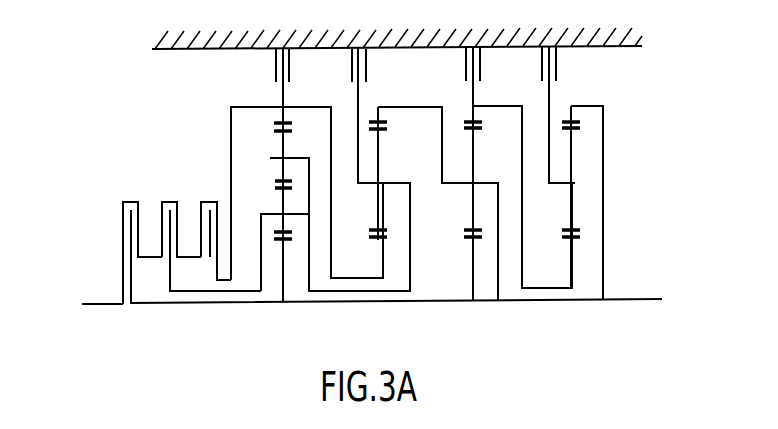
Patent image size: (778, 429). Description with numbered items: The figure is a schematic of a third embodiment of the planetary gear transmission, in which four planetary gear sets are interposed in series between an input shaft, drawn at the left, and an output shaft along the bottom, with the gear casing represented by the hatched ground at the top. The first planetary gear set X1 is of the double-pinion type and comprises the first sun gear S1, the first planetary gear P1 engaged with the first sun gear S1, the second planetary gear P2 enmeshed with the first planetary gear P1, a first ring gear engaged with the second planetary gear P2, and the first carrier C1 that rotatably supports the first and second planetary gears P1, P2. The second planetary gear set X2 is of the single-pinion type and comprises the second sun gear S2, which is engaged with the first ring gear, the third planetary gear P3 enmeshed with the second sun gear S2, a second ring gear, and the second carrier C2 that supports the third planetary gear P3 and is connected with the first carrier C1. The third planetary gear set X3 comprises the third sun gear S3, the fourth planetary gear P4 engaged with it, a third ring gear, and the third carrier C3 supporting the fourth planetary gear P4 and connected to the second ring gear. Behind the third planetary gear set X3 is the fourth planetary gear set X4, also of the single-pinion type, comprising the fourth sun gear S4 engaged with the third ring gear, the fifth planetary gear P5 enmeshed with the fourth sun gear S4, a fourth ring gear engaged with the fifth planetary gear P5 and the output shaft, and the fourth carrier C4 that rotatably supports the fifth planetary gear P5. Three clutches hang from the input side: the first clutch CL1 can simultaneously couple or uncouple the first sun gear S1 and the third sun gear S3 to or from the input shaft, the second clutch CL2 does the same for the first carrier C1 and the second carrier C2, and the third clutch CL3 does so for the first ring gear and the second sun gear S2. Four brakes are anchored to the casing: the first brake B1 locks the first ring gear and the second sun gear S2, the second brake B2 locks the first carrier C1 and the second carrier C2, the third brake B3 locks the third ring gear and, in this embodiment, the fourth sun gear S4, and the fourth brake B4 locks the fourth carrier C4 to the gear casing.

The first clutch CL1 is at (131, 202).
The second clutch CL2 is at (172, 202).
The third clutch CL3 is at (211, 202).
The first brake B1 is at (275, 66).
The second brake B2 is at (351, 66).
The third brake B3 is at (465, 66).
The fourth brake B4 is at (557, 66).
The first planetary gear P1 is at (280, 191).
The second planetary gear P2 is at (280, 136).
The third planetary gear P3 is at (384, 144).
The fourth planetary gear P4 is at (479, 144).
The fifth planetary gear P5 is at (572, 141).
The first carrier C1 is at (309, 168).
The second carrier C2 is at (388, 184).
The third carrier C3 is at (485, 183).
The fourth carrier C4 is at (574, 188).
The first sun gear S1 is at (281, 247).
The second sun gear S2 is at (376, 247).
The third sun gear S3 is at (471, 247).
The fourth sun gear S4 is at (569, 247).
The first planetary gear set X1 is at (293, 250).
The second planetary gear set X2 is at (394, 250).
The third planetary gear set X3 is at (482, 249).
The fourth planetary gear set X4 is at (578, 249).